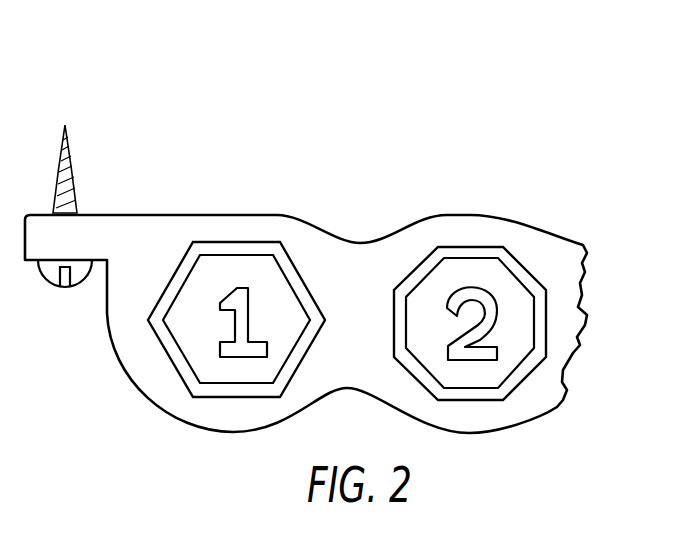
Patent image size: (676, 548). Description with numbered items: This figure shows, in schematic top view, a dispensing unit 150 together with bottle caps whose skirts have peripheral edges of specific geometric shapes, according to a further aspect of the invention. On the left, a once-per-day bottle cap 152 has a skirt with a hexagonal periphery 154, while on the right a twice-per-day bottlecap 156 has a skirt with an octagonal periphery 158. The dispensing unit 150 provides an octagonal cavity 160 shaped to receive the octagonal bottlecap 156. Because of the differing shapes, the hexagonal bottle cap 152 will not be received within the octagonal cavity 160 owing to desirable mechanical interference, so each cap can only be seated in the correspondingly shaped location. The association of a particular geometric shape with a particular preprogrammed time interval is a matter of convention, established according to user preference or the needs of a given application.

The dispensing unit 150 is at (164, 118).
The once-per-day bottle cap 152 is at (195, 355).
The hexagonal periphery 154 is at (247, 257).
The twice-per-day bottlecap 156 is at (473, 283).
The octagonal periphery 158 is at (532, 287).
The octagonal cavity 160 is at (547, 340).